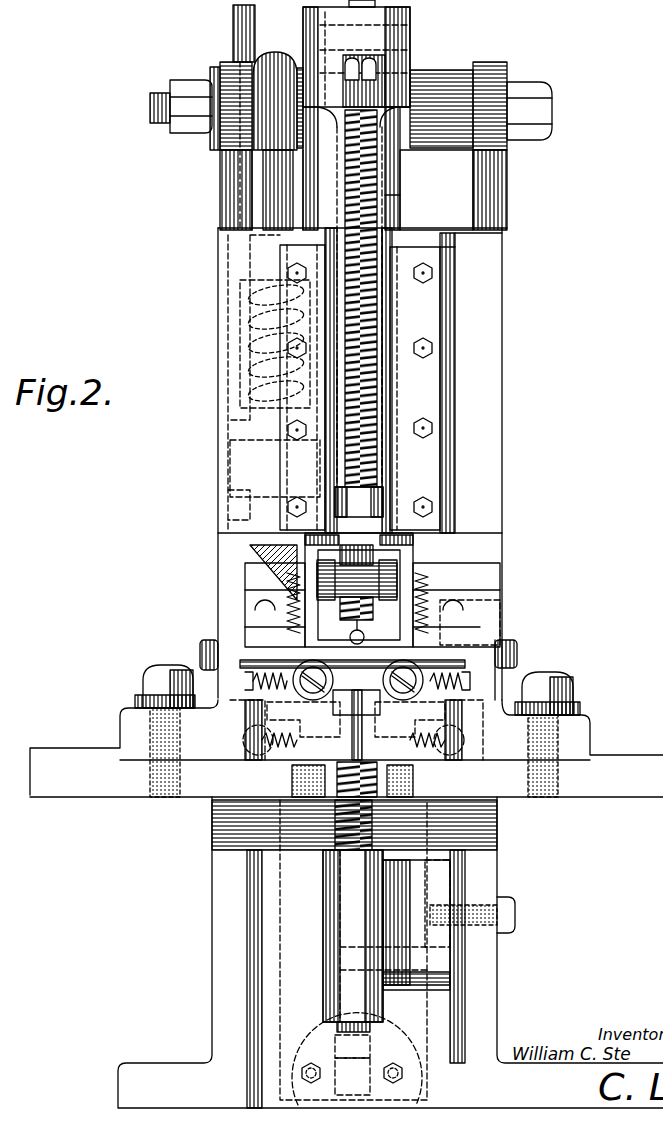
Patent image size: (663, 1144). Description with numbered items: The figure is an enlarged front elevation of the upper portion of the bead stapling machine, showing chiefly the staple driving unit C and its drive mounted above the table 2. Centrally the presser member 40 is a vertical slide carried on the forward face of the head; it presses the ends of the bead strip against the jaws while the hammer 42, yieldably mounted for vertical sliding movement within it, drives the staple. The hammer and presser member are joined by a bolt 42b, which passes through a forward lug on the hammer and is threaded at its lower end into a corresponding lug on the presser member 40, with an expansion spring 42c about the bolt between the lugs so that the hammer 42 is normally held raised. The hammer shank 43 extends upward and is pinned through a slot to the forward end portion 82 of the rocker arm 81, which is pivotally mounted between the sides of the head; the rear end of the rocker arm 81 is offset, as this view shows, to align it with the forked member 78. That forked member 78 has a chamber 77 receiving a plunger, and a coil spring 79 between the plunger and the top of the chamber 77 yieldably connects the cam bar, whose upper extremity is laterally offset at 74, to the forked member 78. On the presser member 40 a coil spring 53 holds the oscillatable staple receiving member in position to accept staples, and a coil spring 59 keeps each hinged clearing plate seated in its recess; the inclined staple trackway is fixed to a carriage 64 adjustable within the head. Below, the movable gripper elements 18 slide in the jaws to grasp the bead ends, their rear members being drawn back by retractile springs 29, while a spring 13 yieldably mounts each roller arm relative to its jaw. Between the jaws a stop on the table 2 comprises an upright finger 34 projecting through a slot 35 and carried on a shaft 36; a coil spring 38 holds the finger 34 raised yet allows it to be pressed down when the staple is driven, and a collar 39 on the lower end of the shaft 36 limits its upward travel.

The table 2 is at (631, 758).
The spring 13 is at (245, 740).
The movable gripper element 18 is at (380, 690).
The retractile spring 29 is at (300, 672).
The upright finger 34 is at (363, 710).
The slot 35 is at (370, 833).
The shaft 36 is at (352, 848).
The coil spring 38 is at (350, 836).
The collar 39 is at (340, 1008).
The presser member 40 is at (400, 200).
The hammer 42 is at (384, 178).
The bolt 42b is at (375, 372).
The expansion spring 42c is at (375, 302).
The hammer shank 43 is at (348, 600).
The coil spring 53 is at (372, 620).
The coil spring 59 is at (290, 590).
The carriage 64 is at (452, 638).
The lateral offset 74 is at (295, 598).
The chamber 77 is at (245, 310).
The forked member 78 is at (232, 43).
The coil spring 79 is at (258, 348).
The rocker arm 81 is at (230, 173).
The forward end portion 82 is at (368, 32).
The staple driving unit C is at (512, 464).